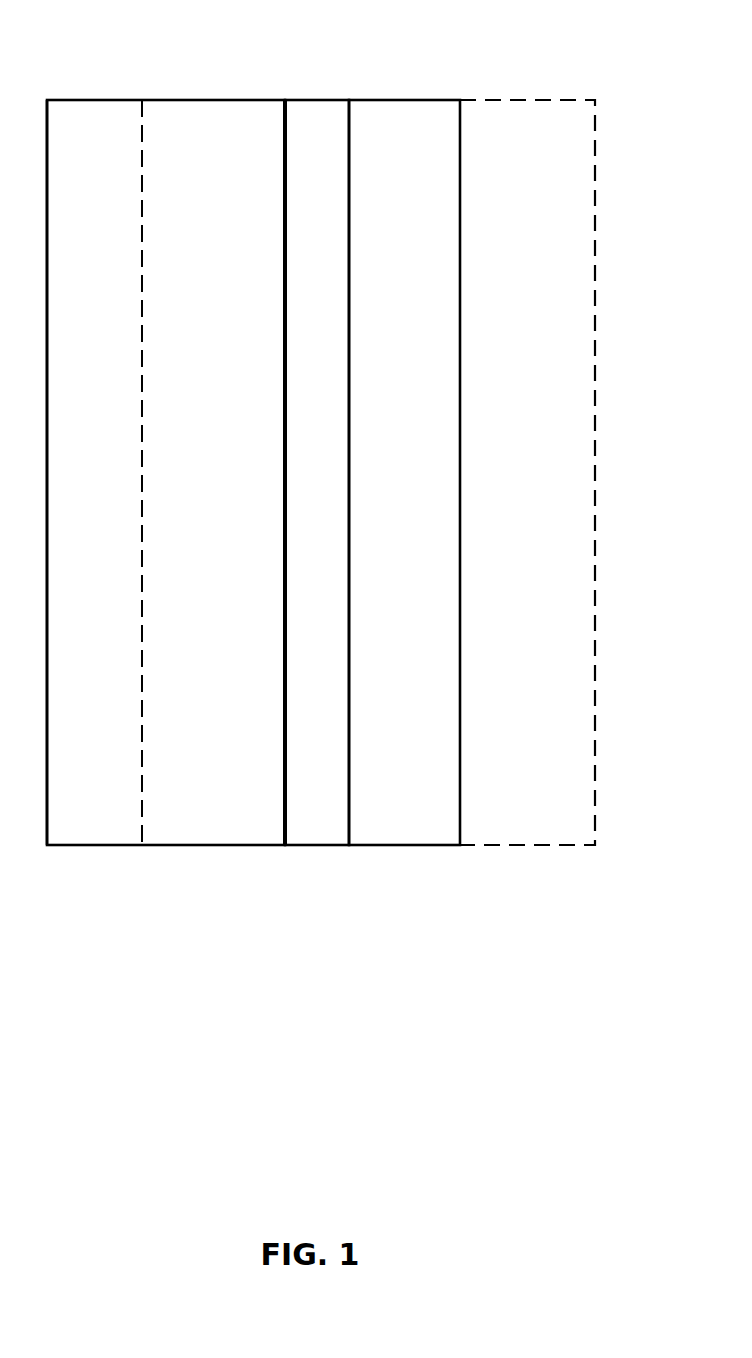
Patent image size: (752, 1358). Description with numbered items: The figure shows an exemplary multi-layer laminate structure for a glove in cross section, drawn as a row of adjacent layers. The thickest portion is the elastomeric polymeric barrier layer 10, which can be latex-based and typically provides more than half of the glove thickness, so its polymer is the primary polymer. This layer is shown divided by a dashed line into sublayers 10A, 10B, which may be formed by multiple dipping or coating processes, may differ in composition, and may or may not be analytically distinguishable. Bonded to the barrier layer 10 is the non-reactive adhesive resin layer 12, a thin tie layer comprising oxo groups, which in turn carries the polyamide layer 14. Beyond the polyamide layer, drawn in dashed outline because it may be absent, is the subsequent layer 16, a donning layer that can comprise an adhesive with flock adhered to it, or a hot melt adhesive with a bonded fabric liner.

The elastomeric polymeric barrier layer 10 is at (285, 865).
The sublayer 10A is at (90, 100).
The sublayer 10B is at (212, 100).
The non-reactive adhesive resin layer 12 is at (318, 847).
The polyamide layer 14 is at (406, 847).
The subsequent layer 16 is at (527, 847).